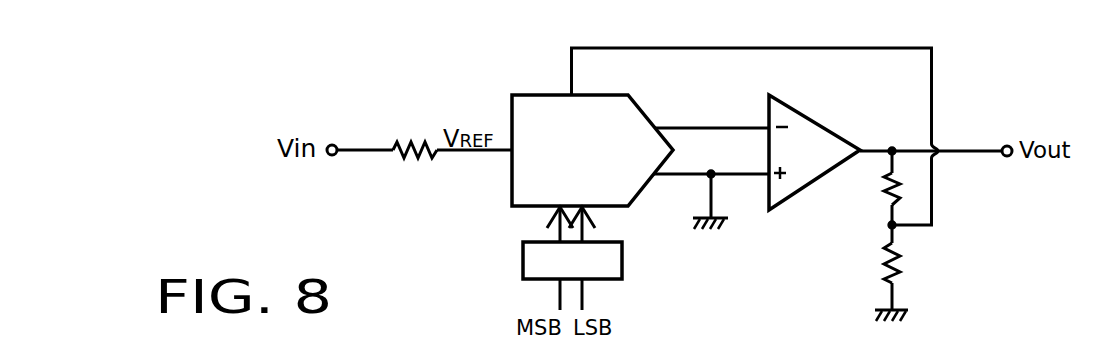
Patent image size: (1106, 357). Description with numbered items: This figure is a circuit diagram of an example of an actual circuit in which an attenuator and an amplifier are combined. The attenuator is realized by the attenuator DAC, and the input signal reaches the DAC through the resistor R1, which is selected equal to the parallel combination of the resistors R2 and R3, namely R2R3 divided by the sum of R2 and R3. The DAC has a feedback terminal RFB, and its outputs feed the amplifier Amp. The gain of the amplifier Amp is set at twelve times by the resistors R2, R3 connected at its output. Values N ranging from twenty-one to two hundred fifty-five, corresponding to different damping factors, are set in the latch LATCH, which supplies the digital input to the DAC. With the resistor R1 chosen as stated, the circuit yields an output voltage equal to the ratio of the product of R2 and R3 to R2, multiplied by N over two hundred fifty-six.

The resistor R1 is at (398, 141).
The resistor R2 is at (884, 265).
The resistor R3 is at (884, 193).
The DAC feedback resistor terminal RFB is at (755, 136).
The attenuator DAC is at (592, 150).
The amplifier Amp is at (814, 152).
The latch LATCH is at (572, 258).